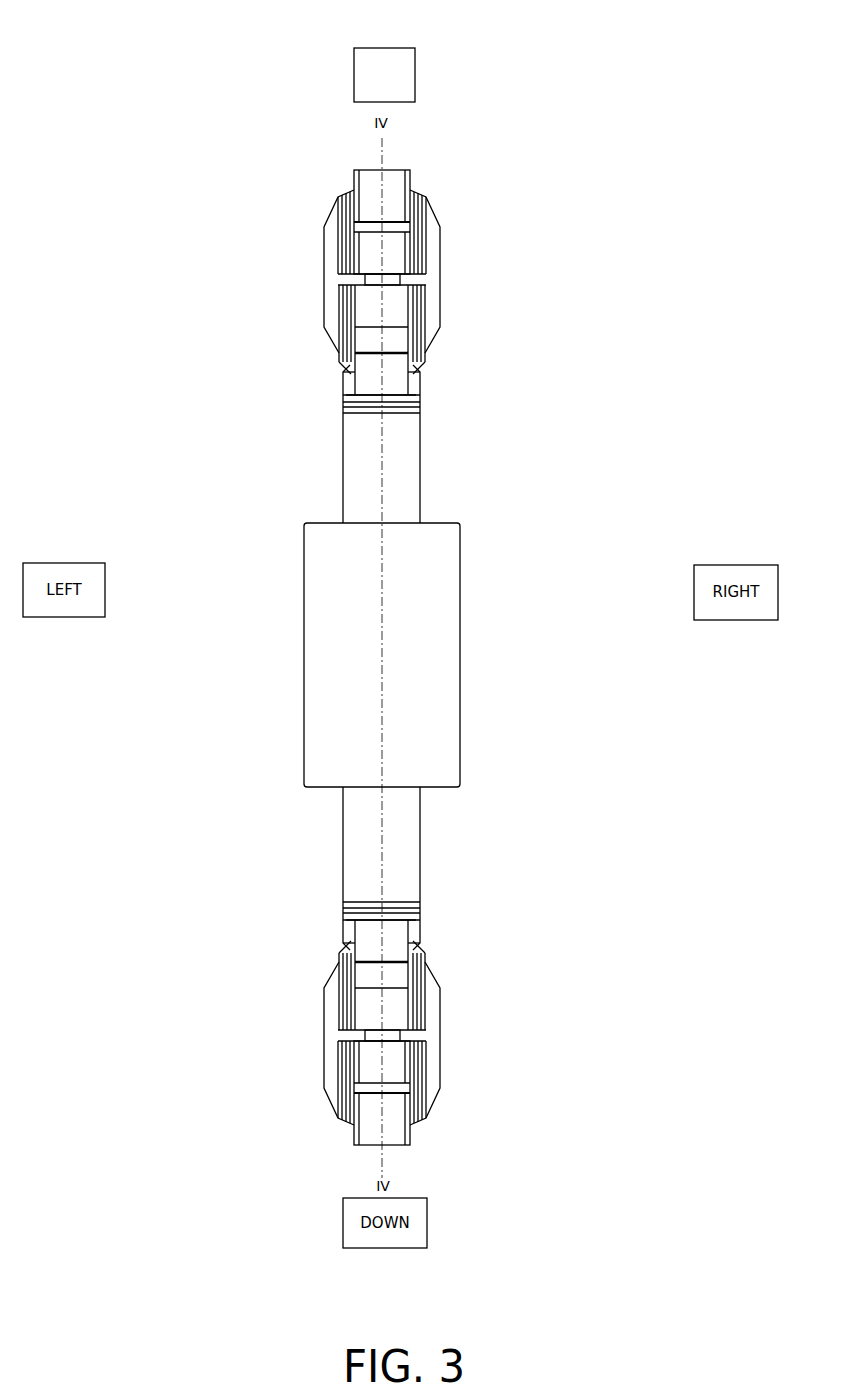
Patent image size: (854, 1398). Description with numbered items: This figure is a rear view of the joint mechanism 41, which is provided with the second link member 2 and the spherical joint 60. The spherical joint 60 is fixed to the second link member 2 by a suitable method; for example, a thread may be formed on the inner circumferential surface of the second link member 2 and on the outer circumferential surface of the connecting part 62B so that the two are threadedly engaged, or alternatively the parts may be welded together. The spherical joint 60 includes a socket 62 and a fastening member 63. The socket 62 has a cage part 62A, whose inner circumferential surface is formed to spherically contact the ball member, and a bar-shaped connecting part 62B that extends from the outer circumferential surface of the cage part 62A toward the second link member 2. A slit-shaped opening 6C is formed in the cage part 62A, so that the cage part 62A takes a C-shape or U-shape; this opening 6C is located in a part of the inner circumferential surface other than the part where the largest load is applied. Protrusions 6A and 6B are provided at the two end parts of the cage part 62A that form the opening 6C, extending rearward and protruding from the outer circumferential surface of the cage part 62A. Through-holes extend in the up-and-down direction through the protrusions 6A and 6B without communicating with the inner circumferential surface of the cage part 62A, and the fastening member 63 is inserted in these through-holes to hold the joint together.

The second link member 2 is at (326, 655).
The joint mechanism 41 is at (384, 57).
The spherical joint 60 is at (376, 646).
The socket 62 is at (327, 247).
The cage part 62A is at (366, 181).
The connecting part 62B is at (366, 428).
The fastening member 63 is at (362, 341).
The protrusion 6A is at (397, 256).
The protrusion 6B is at (396, 307).
The opening 6C is at (368, 279).